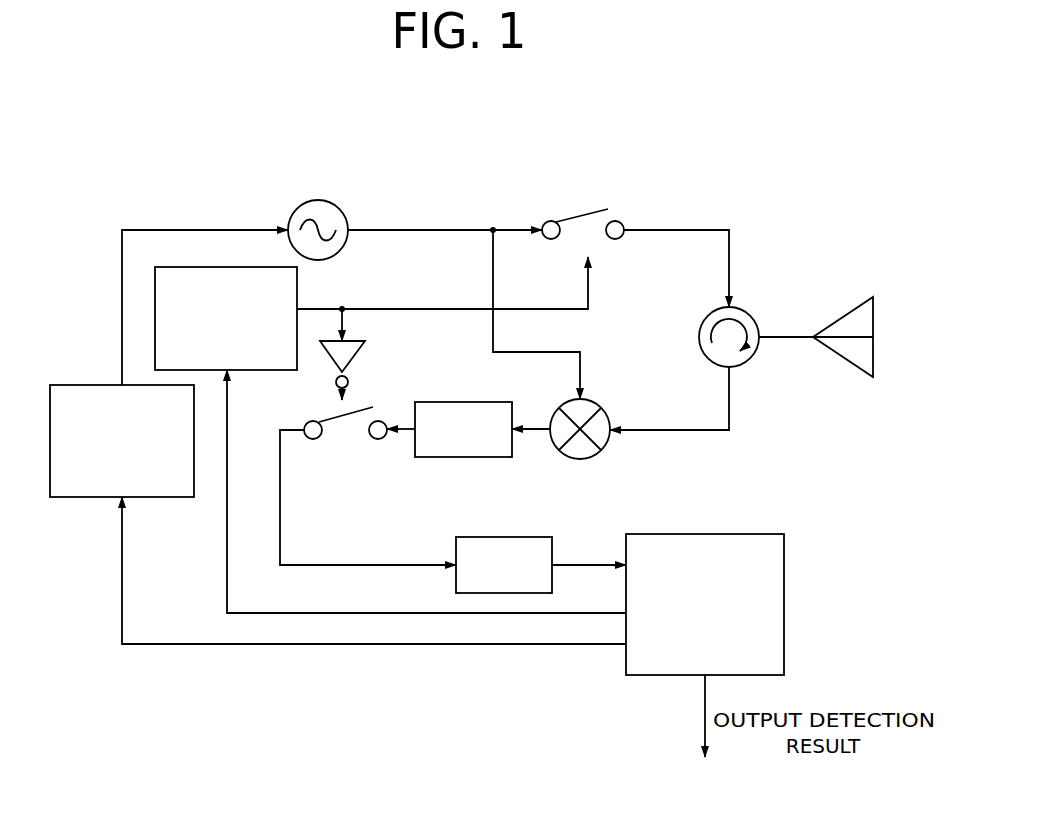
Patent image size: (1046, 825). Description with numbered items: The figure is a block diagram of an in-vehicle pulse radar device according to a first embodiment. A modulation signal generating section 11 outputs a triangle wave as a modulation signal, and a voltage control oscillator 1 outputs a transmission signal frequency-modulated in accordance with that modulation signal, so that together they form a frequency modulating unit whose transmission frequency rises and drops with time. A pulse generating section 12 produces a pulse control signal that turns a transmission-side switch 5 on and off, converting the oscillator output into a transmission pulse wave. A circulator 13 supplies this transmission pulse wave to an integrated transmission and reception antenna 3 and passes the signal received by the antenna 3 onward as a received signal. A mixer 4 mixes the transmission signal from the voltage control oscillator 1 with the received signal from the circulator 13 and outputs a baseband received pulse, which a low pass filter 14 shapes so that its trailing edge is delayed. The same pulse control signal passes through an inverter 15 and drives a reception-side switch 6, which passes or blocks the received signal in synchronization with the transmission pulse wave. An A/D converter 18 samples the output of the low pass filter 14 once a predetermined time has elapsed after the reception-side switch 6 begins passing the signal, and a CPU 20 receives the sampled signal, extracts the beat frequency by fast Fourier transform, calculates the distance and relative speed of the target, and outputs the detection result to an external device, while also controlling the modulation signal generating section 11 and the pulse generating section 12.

The voltage control oscillator 1 is at (350, 217).
The transmission and reception antenna 3 is at (850, 310).
The mixer 4 is at (593, 400).
The transmission-side switch 5 is at (608, 210).
The reception-side switch 6 is at (340, 433).
The modulation signal generating section 11 is at (82, 385).
The pulse generating section 12 is at (197, 267).
The circulator 13 is at (742, 307).
The low pass filter 14 is at (460, 458).
The inverter 15 is at (357, 358).
The A/D converter 18 is at (502, 593).
The CPU 20 is at (733, 534).